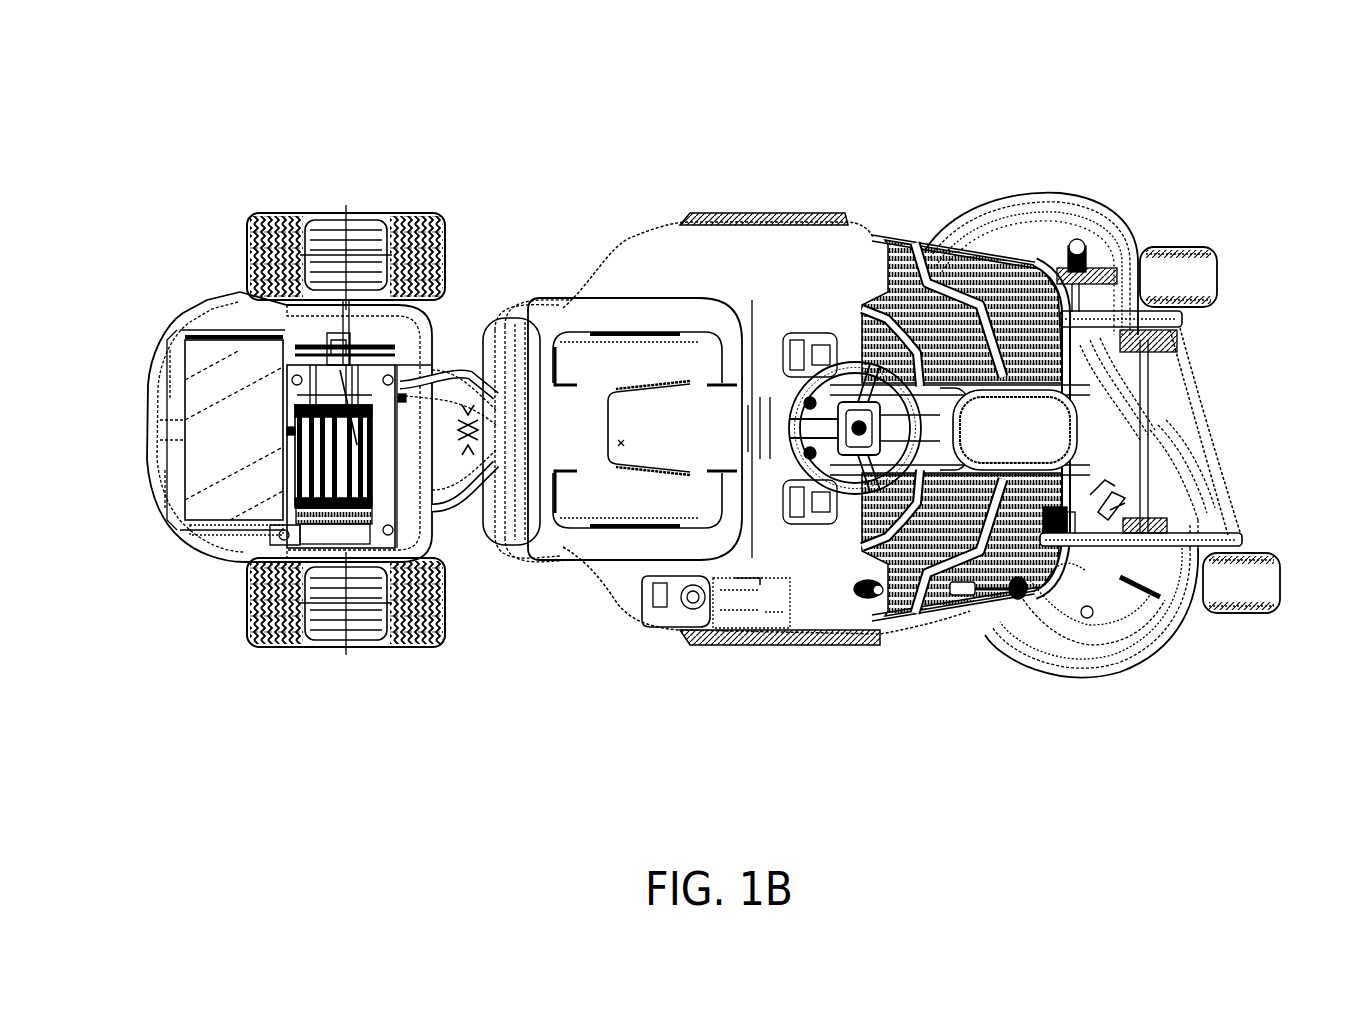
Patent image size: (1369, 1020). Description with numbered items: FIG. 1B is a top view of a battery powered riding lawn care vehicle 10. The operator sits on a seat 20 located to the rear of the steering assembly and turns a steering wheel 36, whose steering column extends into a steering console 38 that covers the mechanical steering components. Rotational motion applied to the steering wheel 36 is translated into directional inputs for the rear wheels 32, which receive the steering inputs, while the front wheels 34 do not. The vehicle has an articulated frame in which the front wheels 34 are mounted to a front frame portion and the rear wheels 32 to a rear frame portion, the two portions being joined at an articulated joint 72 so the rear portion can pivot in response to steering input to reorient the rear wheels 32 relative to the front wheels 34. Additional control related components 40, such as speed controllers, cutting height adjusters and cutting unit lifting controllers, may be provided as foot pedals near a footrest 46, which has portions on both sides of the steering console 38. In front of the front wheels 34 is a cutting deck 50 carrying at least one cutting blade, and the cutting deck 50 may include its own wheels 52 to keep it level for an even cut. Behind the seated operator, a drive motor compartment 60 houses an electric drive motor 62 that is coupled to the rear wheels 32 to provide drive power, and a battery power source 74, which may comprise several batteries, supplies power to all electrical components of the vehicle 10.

The battery powered riding lawn care vehicle 10 is at (1162, 147).
The seat 20 is at (620, 347).
The rear wheels 32 is at (420, 213).
The front wheels 34 is at (738, 212).
The steering wheel 36 is at (817, 330).
The steering console 38 is at (1065, 437).
The control related components 40 is at (1072, 250).
The footrest 46 is at (918, 250).
The cutting deck 50 is at (1077, 682).
The wheels 52 is at (1203, 257).
The drive motor compartment 60 is at (205, 290).
The electric drive motor 62 is at (288, 525).
The articulated joint 72 is at (462, 340).
The battery power source 74 is at (190, 342).